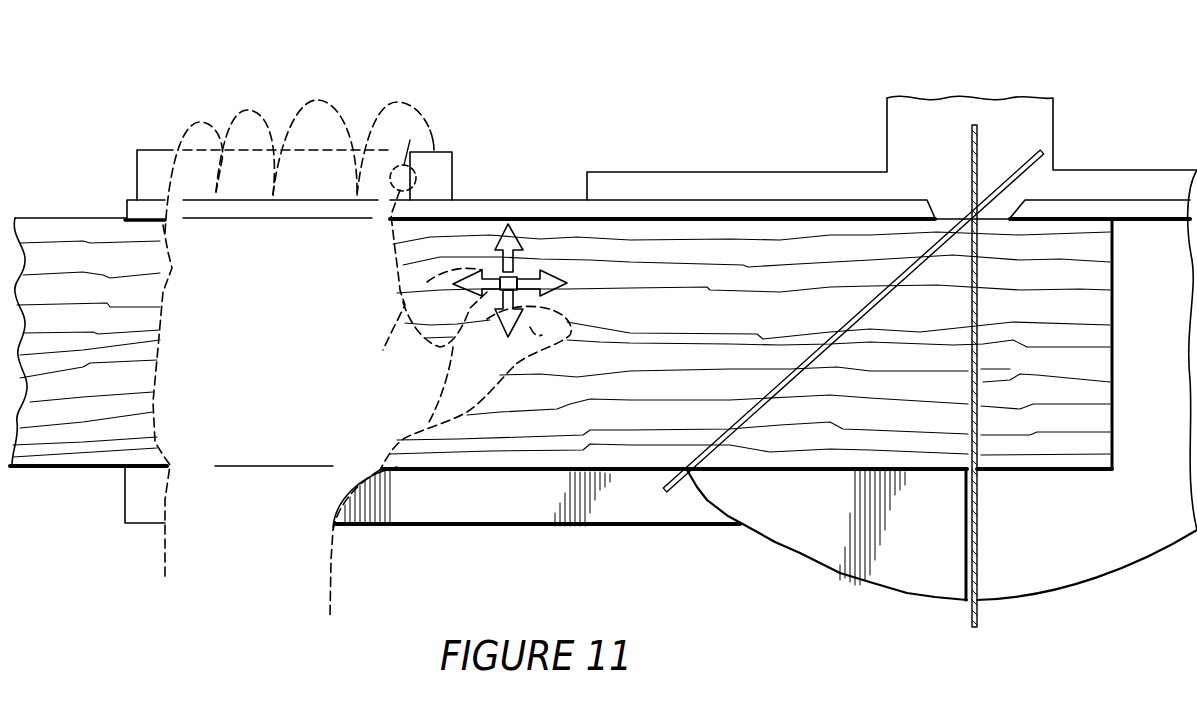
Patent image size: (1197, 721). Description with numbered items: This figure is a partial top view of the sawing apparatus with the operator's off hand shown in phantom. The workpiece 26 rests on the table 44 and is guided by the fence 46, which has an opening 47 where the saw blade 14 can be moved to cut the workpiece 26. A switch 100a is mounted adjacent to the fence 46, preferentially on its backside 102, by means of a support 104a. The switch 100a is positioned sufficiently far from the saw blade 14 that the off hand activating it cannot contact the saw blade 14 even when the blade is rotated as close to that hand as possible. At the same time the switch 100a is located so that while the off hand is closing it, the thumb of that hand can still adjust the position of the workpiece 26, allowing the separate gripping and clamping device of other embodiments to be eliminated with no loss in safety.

The saw blade 14 is at (737, 432).
The workpiece 26 is at (677, 322).
The table 44 is at (495, 505).
The fence 46 is at (660, 220).
The opening 47 is at (935, 218).
The backside 102 is at (532, 200).
The switch 100a is at (417, 170).
The support 104a is at (151, 163).